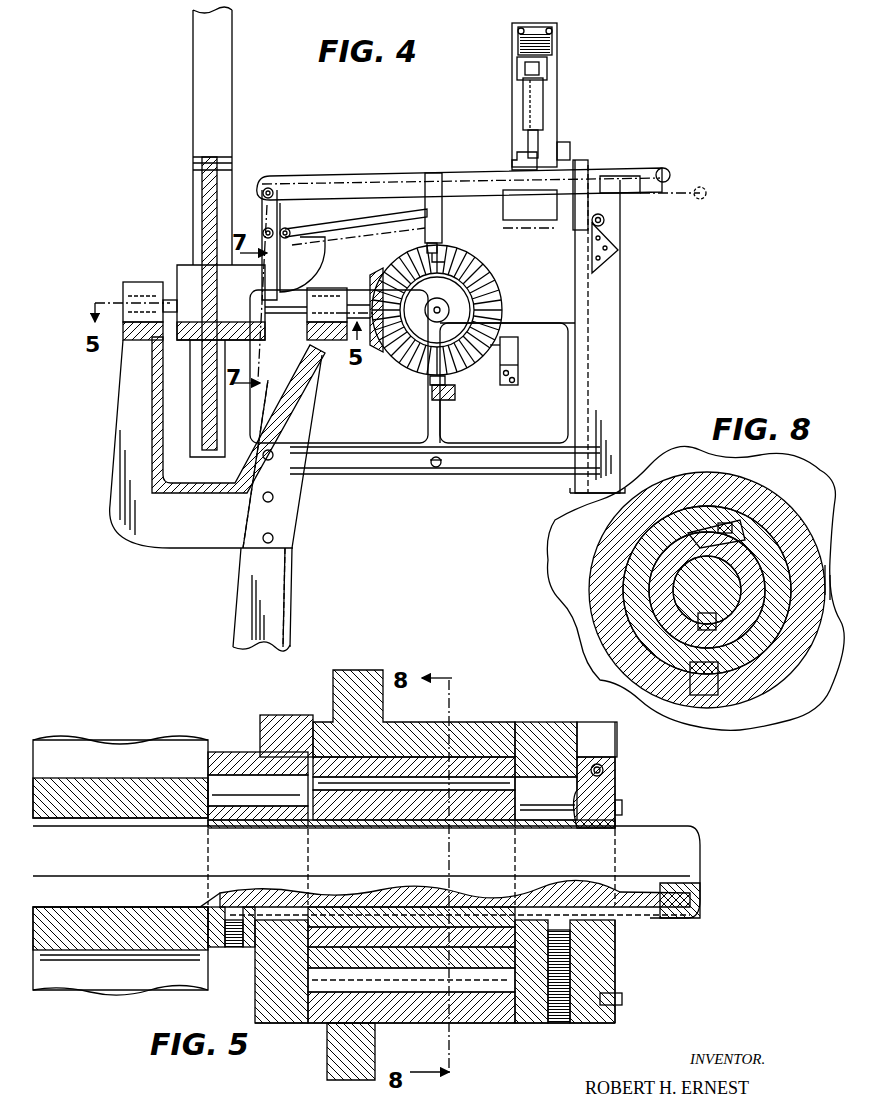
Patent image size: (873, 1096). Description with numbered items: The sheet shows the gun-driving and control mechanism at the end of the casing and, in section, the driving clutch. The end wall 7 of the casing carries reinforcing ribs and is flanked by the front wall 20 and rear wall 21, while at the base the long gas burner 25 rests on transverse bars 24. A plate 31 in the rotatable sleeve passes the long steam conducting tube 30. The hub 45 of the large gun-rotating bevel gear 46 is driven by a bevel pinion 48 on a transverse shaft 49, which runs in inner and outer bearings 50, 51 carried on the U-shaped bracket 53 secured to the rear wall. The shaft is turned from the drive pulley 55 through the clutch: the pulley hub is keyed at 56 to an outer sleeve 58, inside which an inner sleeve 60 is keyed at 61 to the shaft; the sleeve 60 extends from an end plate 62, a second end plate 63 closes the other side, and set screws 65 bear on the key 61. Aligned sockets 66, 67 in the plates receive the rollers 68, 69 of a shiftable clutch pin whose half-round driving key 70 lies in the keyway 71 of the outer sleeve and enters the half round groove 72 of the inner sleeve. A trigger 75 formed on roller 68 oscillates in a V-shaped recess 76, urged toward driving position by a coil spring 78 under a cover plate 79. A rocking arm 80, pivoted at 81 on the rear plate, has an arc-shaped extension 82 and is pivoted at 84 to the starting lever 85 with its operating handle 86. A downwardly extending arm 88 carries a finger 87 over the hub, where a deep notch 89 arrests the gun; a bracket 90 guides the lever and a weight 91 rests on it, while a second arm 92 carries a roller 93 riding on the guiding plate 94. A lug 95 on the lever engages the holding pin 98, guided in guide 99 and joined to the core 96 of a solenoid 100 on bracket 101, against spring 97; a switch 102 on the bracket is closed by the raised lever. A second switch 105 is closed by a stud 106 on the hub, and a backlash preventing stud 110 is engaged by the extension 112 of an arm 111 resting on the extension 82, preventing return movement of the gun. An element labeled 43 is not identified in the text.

In FIG. 4, the end wall 7 is at (570, 320).
In FIG. 4, the front wall 20 is at (612, 355).
In FIG. 4, the rear wall 21 is at (292, 572).
In FIG. 4, the transverse bars 24 is at (540, 478).
In FIG. 4, the gas burner 25 is at (432, 468).
In FIG. 4, the steam conducting tube 30 is at (428, 322).
In FIG. 4, the plate 31 is at (456, 330).
In FIG. 4, the bracket 43 is at (447, 400).
In FIG. 4, the hub 45 is at (480, 262).
In FIG. 4, the bevel gear 46 is at (500, 300).
In FIG. 4, the bevel pinion 48 is at (378, 350).
In FIG. 4, the transverse shaft 49 is at (325, 340).
In FIG. 8, the transverse shaft 49 is at (690, 575).
In FIG. 5, the transverse shaft 49 is at (680, 860).
In FIG. 4, the inner bearing 50 is at (300, 325).
In FIG. 4, the outer bearing 51 is at (155, 282).
In FIG. 5, the outer bearing 51 is at (150, 768).
In FIG. 4, the U-shaped bracket 53 is at (112, 436).
In FIG. 5, the U-shaped bracket 53 is at (125, 975).
In FIG. 4, the drive pulley 55 is at (202, 218).
In FIG. 8, the drive pulley 55 is at (598, 557).
In FIG. 5, the drive pulley 55 is at (360, 670).
In FIG. 8, the key 56 is at (704, 696).
In FIG. 5, the key 56 is at (480, 998).
In FIG. 8, the outer sleeve 58 is at (620, 580).
In FIG. 5, the outer sleeve 58 is at (490, 760).
In FIG. 8, the inner sleeve 60 is at (655, 597).
In FIG. 5, the inner sleeve 60 is at (432, 950).
In FIG. 8, the key 61 is at (698, 622).
In FIG. 5, the key 61 is at (615, 928).
In FIG. 4, the end plate 62 is at (248, 340).
In FIG. 5, the end plate 62 is at (535, 1023).
In FIG. 4, the second end plate 63 is at (190, 265).
In FIG. 5, the second end plate 63 is at (283, 1023).
In FIG. 5, the set screws 65 is at (234, 947).
In FIG. 5, the socket 66 is at (560, 775).
In FIG. 5, the socket 67 is at (235, 768).
In FIG. 5, the roller 68 is at (580, 797).
In FIG. 8, the roller 69 is at (733, 525).
In FIG. 5, the roller 69 is at (283, 750).
In FIG. 8, the half-round driving key 70 is at (745, 537).
In FIG. 5, the half-round driving key 70 is at (375, 780).
In FIG. 8, the keyway 71 is at (707, 530).
In FIG. 5, the keyway 71 is at (462, 780).
In FIG. 8, the half round groove 72 is at (685, 530).
In FIG. 4, the trigger 75 is at (245, 316).
In FIG. 5, the trigger 75 is at (605, 780).
In FIG. 5, the V-shaped recess 76 is at (605, 722).
In FIG. 5, the coil spring 78 is at (603, 768).
In FIG. 4, the cover plate 79 is at (283, 322).
In FIG. 5, the cover plate 79 is at (618, 980).
In FIG. 4, the rocking arm 80 is at (290, 237).
In FIG. 4, the pivot 81 is at (263, 232).
In FIG. 4, the arc-shaped extension 82 is at (322, 255).
In FIG. 4, the pivot 84 is at (270, 190).
In FIG. 4, the starting lever 85 is at (396, 178).
In FIG. 4, the operating handle 86 is at (670, 172).
In FIG. 4, the finger 87 is at (442, 240).
In FIG. 4, the downwardly extending arm 88 is at (442, 222).
In FIG. 4, the notch 89 is at (448, 261).
In FIG. 4, the bracket 90 is at (588, 168).
In FIG. 4, the weight 91 is at (512, 228).
In FIG. 4, the second downwardly extending arm 92 is at (610, 202).
In FIG. 4, the roller 93 is at (605, 221).
In FIG. 4, the guiding plate 94 is at (615, 245).
In FIG. 4, the lug 95 is at (514, 160).
In FIG. 4, the core 96 is at (525, 68).
In FIG. 4, the spring 97 is at (548, 66).
In FIG. 4, the holding pin 98 is at (540, 137).
In FIG. 4, the guide 99 is at (523, 97).
In FIG. 4, the solenoid 100 is at (553, 46).
In FIG. 4, the bracket 101 is at (557, 100).
In FIG. 4, the switch 102 is at (570, 148).
In FIG. 4, the second switch 105 is at (518, 356).
In FIG. 4, the stud 106 is at (433, 382).
In FIG. 4, the backlash preventing stud 110 is at (425, 248).
In FIG. 4, the arm 111 is at (352, 220).
In FIG. 4, the extension 112 is at (405, 228).